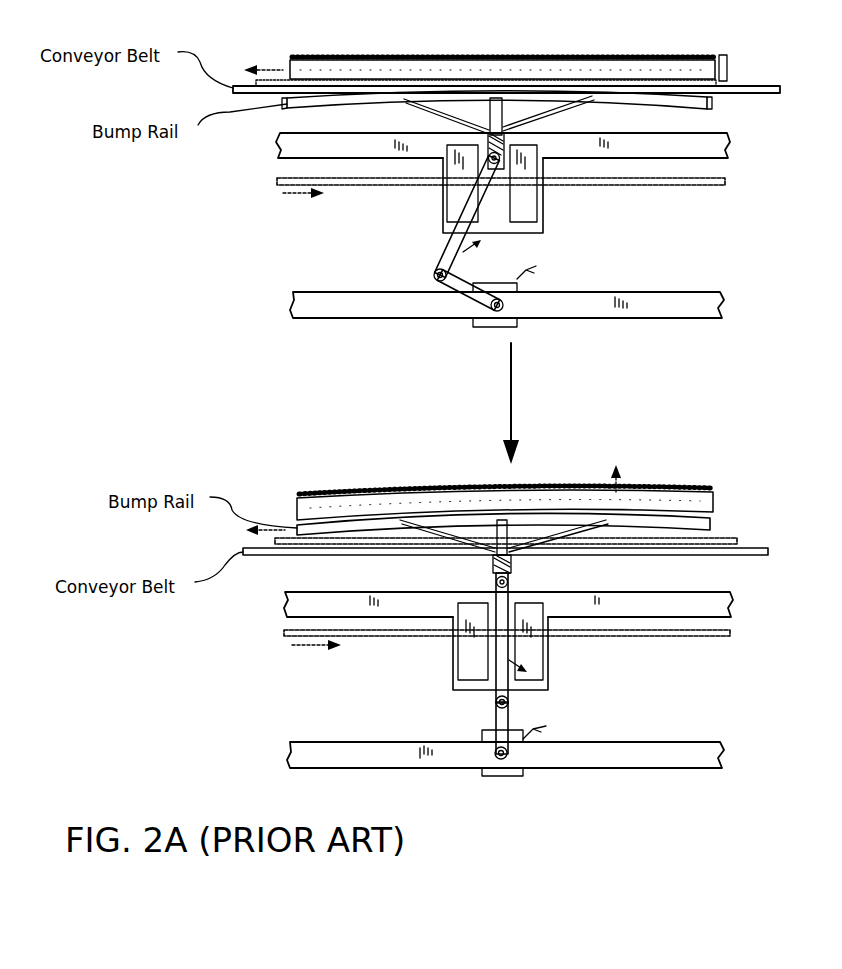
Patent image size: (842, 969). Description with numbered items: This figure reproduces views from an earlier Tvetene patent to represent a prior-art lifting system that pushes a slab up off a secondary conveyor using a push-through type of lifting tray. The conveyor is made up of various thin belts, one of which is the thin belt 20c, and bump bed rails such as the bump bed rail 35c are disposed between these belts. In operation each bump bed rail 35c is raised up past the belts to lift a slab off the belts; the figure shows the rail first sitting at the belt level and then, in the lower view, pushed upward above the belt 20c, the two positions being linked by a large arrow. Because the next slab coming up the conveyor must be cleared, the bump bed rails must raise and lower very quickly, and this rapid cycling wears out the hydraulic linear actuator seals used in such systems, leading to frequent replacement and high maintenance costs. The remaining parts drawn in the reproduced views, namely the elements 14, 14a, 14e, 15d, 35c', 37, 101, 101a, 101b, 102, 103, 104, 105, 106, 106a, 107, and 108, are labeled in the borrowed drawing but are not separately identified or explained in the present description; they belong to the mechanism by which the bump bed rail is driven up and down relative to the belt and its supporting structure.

The support rail 14 is at (733, 605).
The support rail 14a is at (728, 158).
The plate under conveyor belt 14e is at (782, 92).
The brush pad 15d is at (716, 500).
The thin belt 20c is at (725, 82).
The bump bed rail 35c is at (498, 328).
The bump rail end 35c' is at (500, 116).
The lifting mechanism 37 is at (306, 251).
The housing 101 is at (545, 233).
The housing guide block 101a is at (526, 198).
The housing guide block 101b is at (455, 195).
The pivot pin 102 is at (489, 212).
The lower link 103 is at (450, 290).
The upper link 104 is at (462, 248).
The lower pivot 105 is at (504, 305).
The bracket 106 is at (520, 318).
The bracket hook 106a is at (530, 276).
The middle pivot 107 is at (434, 275).
The hatched post block 108 is at (489, 150).